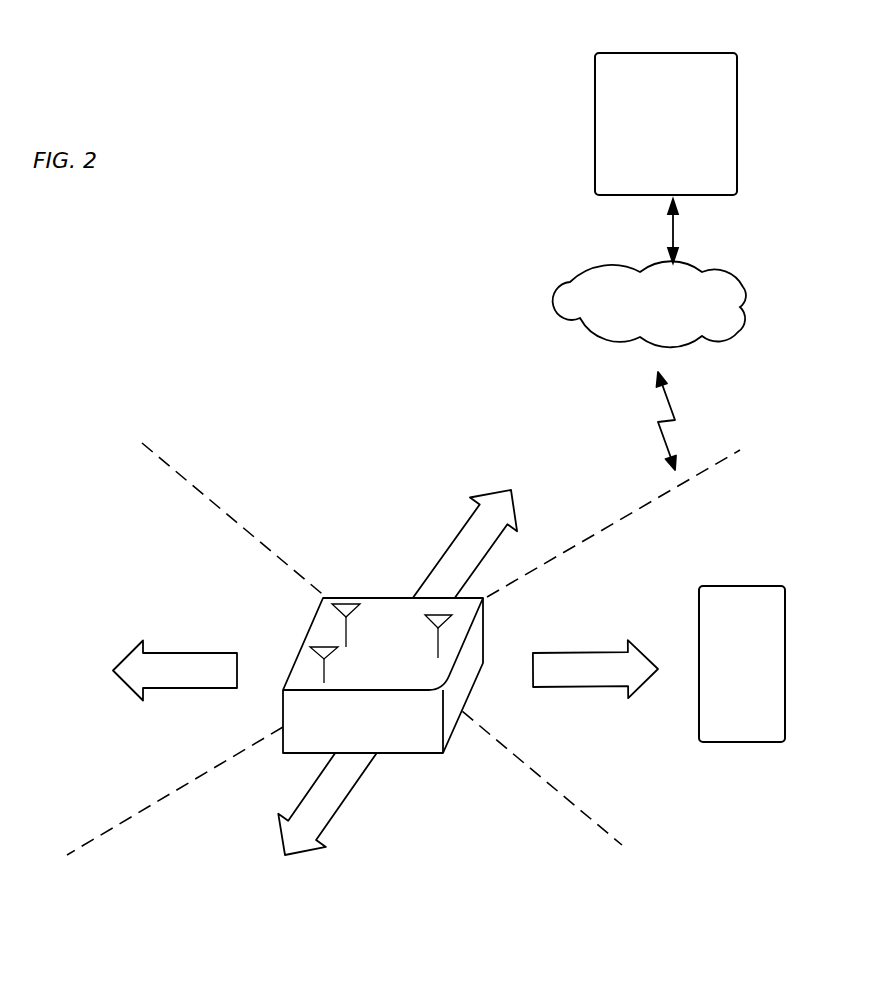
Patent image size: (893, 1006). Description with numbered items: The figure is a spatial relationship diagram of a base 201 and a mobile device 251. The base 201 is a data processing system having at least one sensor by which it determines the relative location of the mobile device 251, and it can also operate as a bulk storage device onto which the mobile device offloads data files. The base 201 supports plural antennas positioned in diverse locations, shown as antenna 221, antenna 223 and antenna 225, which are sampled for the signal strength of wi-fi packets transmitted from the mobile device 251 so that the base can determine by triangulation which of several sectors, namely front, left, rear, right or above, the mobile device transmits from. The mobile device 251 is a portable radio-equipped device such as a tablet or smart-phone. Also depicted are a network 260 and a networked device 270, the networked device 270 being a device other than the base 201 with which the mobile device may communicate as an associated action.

The base 201 is at (398, 652).
The antenna 221 is at (317, 647).
The antenna 223 is at (437, 634).
The antenna 225 is at (347, 598).
The mobile device 251 is at (757, 702).
The network 260 is at (665, 322).
The networked device 270 is at (704, 142).